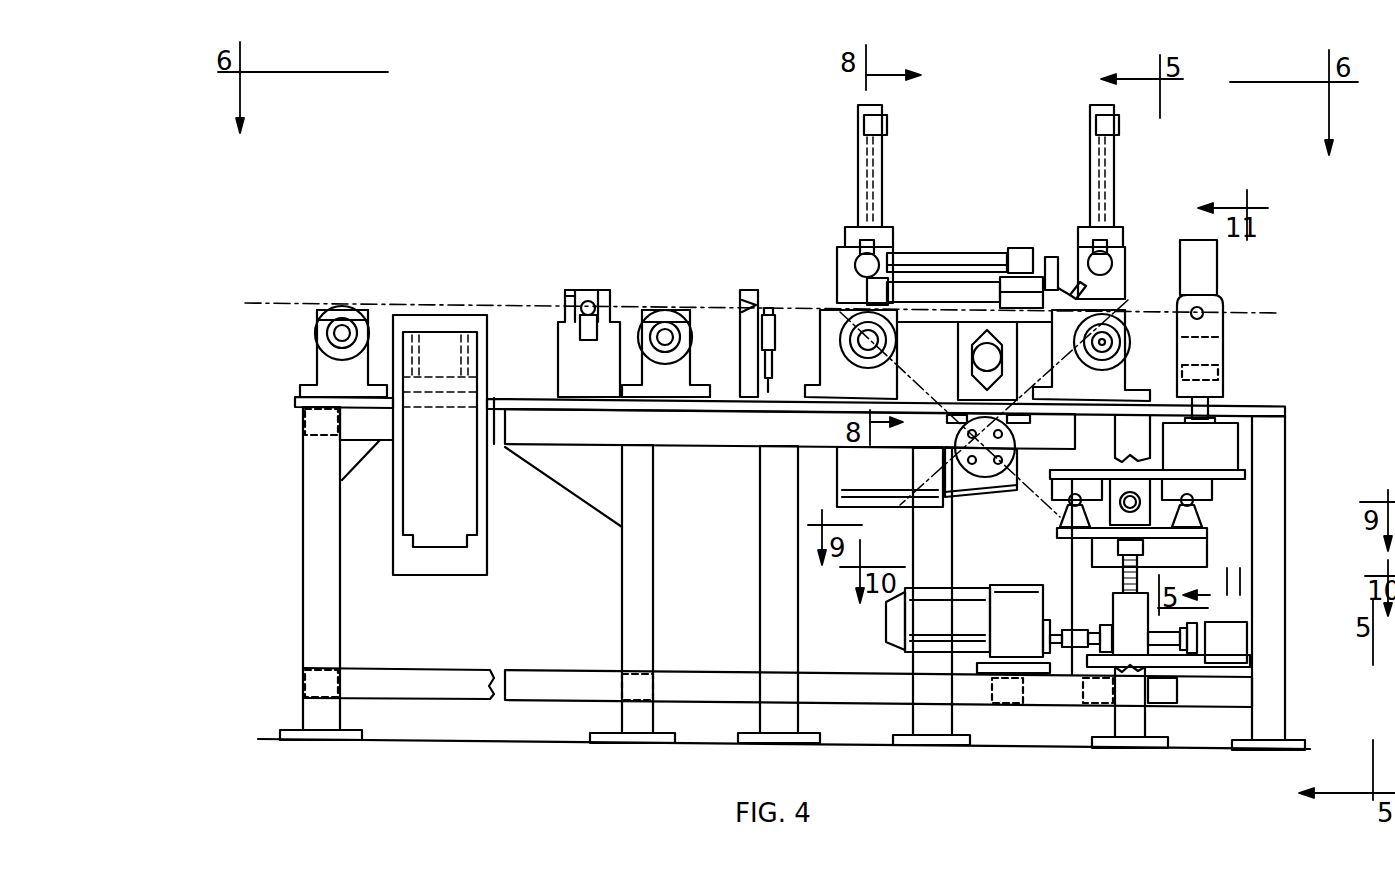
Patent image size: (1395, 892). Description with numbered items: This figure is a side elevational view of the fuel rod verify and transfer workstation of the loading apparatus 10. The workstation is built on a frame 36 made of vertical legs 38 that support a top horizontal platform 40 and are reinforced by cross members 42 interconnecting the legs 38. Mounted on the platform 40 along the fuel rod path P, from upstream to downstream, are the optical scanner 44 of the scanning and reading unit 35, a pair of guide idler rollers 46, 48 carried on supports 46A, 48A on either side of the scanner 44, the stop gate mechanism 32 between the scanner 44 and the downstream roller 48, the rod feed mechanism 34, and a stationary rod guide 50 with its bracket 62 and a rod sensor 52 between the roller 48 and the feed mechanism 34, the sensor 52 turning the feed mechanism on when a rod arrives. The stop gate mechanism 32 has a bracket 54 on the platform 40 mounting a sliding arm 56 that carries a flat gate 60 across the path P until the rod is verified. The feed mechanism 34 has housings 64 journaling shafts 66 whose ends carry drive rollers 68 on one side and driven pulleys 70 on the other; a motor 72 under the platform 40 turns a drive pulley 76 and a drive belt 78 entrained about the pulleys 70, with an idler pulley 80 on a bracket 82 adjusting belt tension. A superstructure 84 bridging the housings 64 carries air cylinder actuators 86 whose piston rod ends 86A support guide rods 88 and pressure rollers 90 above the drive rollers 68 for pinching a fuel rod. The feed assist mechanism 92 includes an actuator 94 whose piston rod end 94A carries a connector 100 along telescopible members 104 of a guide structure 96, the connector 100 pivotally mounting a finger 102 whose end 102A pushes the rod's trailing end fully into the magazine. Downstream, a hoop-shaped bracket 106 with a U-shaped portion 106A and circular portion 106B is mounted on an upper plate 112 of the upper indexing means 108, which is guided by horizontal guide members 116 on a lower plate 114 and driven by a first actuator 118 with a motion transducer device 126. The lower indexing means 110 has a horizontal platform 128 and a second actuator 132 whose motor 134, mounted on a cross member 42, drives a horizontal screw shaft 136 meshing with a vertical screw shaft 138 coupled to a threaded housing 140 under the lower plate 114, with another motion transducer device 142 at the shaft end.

The loading apparatus 10 is at (638, 170).
The fuel rod path P is at (507, 305).
The stop gate mechanism 32 is at (581, 268).
The rod feed mechanism 34 is at (1000, 158).
The scanning and reading unit 35 is at (392, 282).
The frame 36 is at (565, 705).
The vertical legs 38 is at (312, 628).
The top horizontal platform 40 is at (542, 400).
The cross members 42 is at (322, 440).
The optical scanner 44 is at (440, 310).
The guide idler roller 46 is at (337, 308).
The support 46A is at (325, 370).
The guide idler roller 48 is at (665, 322).
The support 48A is at (668, 412).
The stationary rod guide 50 is at (749, 290).
The rod sensor 52 is at (768, 318).
The bracket 54 is at (589, 343).
The arm 56 is at (590, 302).
The gate 60 is at (578, 300).
The sensor bracket 62 is at (745, 300).
The housings 64 is at (977, 355).
The shafts 66 is at (878, 340).
The drive rollers 68 is at (848, 340).
The driven pulleys 70 is at (815, 428).
The motor 72 is at (890, 477).
The drive pulley 76 is at (960, 378).
The drive belt 78 is at (1022, 440).
The idler pulley 80 is at (975, 345).
The bracket 82 is at (1104, 338).
The superstructure 84 is at (1001, 240).
The actuators 86 is at (858, 130).
The piston rod ends 86A is at (885, 240).
The guide rods 88 is at (864, 160).
The pressure rollers 90 is at (860, 262).
The feed assist mechanism 92 is at (1022, 250).
The actuator 94 is at (920, 258).
The piston rod end 94A is at (1015, 258).
The guide structure 96 is at (1015, 292).
The connector 100 is at (1052, 255).
The finger 102 is at (1078, 280).
The end of finger 102A is at (1112, 292).
The telescopible members 104 is at (940, 285).
The hoop-shaped bracket 106 is at (1240, 290).
The U-shaped portion 106A is at (1225, 380).
The circular portion 106B is at (1220, 258).
The upper indexing means 108 is at (1215, 505).
The lower indexing means 110 is at (1200, 625).
The upper horizontal plate 112 is at (1240, 478).
The lower horizontal plate 114 is at (1208, 535).
The horizontal guide members 116 is at (1048, 498).
The first actuator 118 is at (1130, 470).
The motion transducer device 126 is at (1152, 512).
The horizontal platform 128 is at (1233, 670).
The second actuator 132 is at (1062, 668).
The motor 134 is at (968, 621).
The horizontal screw shaft 136 is at (1092, 630).
The vertical screw shaft 138 is at (1124, 572).
The internally threaded housing 140 is at (1208, 555).
The motion transducer device 142 is at (1250, 660).